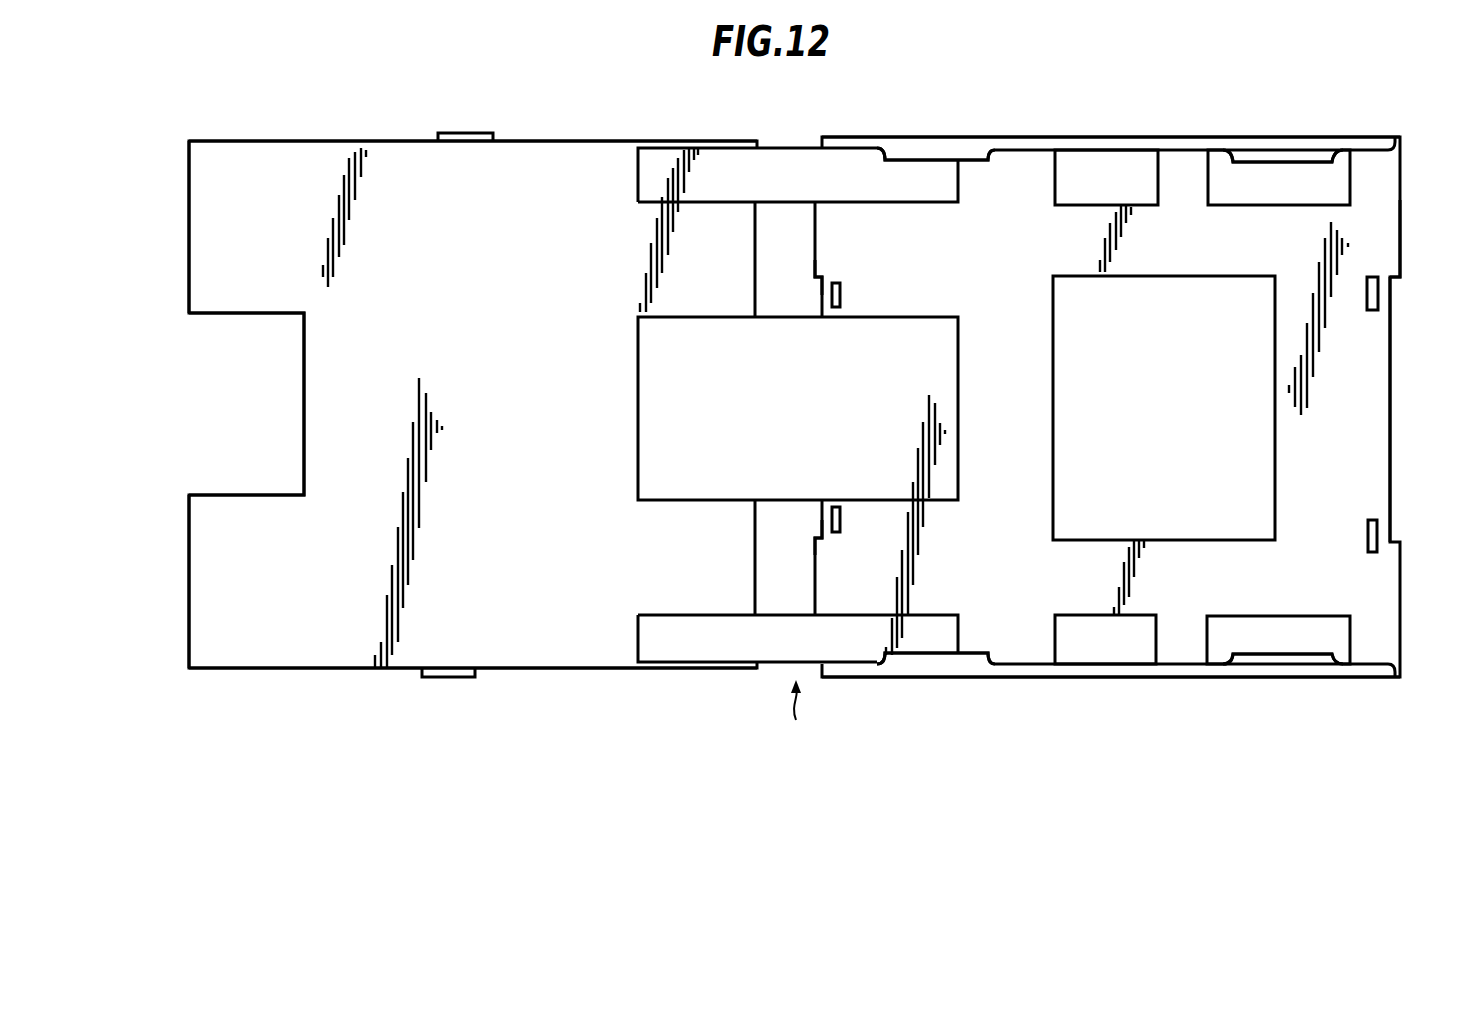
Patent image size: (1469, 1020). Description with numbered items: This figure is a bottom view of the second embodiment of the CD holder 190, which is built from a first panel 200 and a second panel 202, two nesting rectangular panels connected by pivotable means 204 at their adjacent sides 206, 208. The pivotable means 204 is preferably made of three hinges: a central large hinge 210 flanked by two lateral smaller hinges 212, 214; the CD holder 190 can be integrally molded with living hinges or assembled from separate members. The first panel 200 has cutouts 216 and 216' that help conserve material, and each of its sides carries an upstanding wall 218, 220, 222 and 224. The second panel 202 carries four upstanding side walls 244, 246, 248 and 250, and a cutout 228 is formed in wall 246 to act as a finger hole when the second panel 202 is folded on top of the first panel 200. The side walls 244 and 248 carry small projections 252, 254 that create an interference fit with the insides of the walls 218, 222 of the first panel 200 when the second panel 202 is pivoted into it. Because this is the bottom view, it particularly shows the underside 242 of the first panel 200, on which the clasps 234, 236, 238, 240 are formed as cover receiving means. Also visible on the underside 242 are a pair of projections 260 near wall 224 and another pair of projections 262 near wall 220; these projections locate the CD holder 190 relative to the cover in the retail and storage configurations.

The CD holder 190 is at (1099, 93).
The first panel 200 is at (1192, 648).
The second panel 202 is at (583, 635).
The pivotable means 204 is at (817, 712).
The side 206 is at (752, 236).
The side 208 is at (815, 265).
The central large hinge 210 is at (895, 328).
The lateral smaller hinge 212 is at (830, 622).
The lateral smaller hinge 214 is at (897, 194).
The cutout 216 is at (1201, 407).
The terminal cavity 216' is at (1106, 407).
The upstanding wall 218 is at (1120, 137).
The upstanding wall 220 is at (815, 562).
The upstanding wall 222 is at (1100, 677).
The upstanding wall 224 is at (1393, 470).
The cutout 228 is at (303, 380).
The clasp 234 is at (1295, 137).
The clasp 236 is at (1312, 664).
The clasp 238 is at (962, 660).
The clasp 240 is at (980, 152).
The underside 242 is at (1390, 208).
The upstanding side wall 244 is at (585, 140).
The upstanding side wall 246 is at (187, 243).
The upstanding side wall 248 is at (367, 668).
The upstanding side wall 250 is at (753, 523).
The small projection 252 is at (466, 677).
The small projection 254 is at (468, 133).
The projection 260 is at (1368, 302).
The projection 262 is at (840, 296).